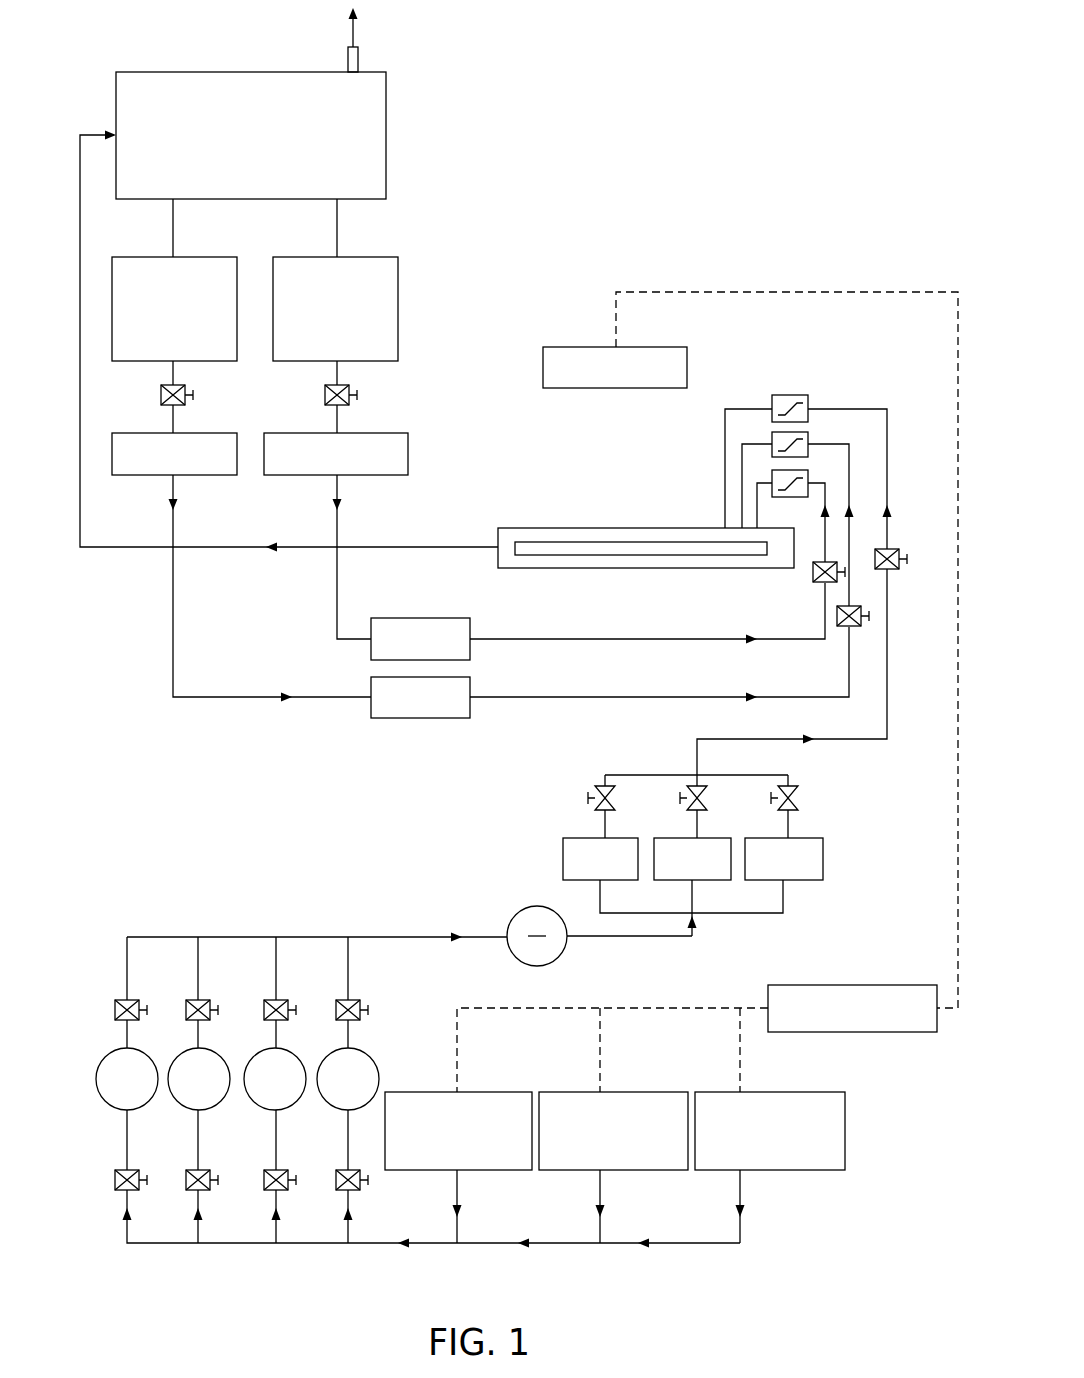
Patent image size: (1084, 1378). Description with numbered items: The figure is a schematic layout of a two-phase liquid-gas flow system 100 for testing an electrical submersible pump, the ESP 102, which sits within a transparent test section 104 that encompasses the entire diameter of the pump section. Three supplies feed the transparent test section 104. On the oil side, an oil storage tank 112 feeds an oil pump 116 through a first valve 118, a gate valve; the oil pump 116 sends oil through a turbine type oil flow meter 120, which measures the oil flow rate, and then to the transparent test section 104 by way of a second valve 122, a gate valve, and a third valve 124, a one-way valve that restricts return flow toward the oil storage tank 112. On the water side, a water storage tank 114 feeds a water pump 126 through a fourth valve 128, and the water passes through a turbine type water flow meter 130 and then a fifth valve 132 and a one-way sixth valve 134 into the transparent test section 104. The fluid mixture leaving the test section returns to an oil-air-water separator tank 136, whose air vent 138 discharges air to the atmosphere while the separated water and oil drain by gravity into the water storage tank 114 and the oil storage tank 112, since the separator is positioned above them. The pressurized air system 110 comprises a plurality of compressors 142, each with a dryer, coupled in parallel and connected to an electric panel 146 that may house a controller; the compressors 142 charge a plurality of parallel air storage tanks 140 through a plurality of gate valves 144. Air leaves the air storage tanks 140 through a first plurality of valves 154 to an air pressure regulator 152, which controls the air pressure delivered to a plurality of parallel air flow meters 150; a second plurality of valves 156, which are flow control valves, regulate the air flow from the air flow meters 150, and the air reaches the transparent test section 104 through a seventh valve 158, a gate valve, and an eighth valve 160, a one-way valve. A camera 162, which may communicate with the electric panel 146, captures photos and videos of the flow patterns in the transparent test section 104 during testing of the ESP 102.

The two-phase liquid-gas flow system 100 is at (764, 140).
The ESP 102 is at (623, 542).
The transparent test section 104 is at (555, 528).
The pressurized air system 110 is at (842, 926).
The oil storage tank 112 is at (124, 361).
The water storage tank 114 is at (398, 310).
The oil pump 116 is at (205, 475).
The first valve 118 is at (195, 395).
The turbine type oil flow meter 120 is at (420, 718).
The second valve 122 is at (836, 608).
The third valve 124 is at (772, 434).
The water pump 126 is at (408, 452).
The fourth valve 128 is at (359, 395).
The turbine type water flow meter 130 is at (420, 618).
The fifth valve 132 is at (812, 570).
The sixth valve 134 is at (772, 472).
The oil-air-water separator tank 136 is at (250, 72).
The air vent 138 is at (358, 50).
The air storage tanks 140 is at (343, 1110).
The compressors 142 is at (722, 1092).
The gate valves 144 is at (198, 1190).
The electric panel 146 is at (897, 1032).
The air flow meters 150 is at (800, 880).
The air pressure regulator 152 is at (540, 906).
The first plurality of valves 154 is at (198, 1000).
The second plurality of valves 156 is at (788, 775).
The seventh valve 158 is at (912, 560).
The eighth valve 160 is at (790, 395).
The camera 162 is at (573, 347).